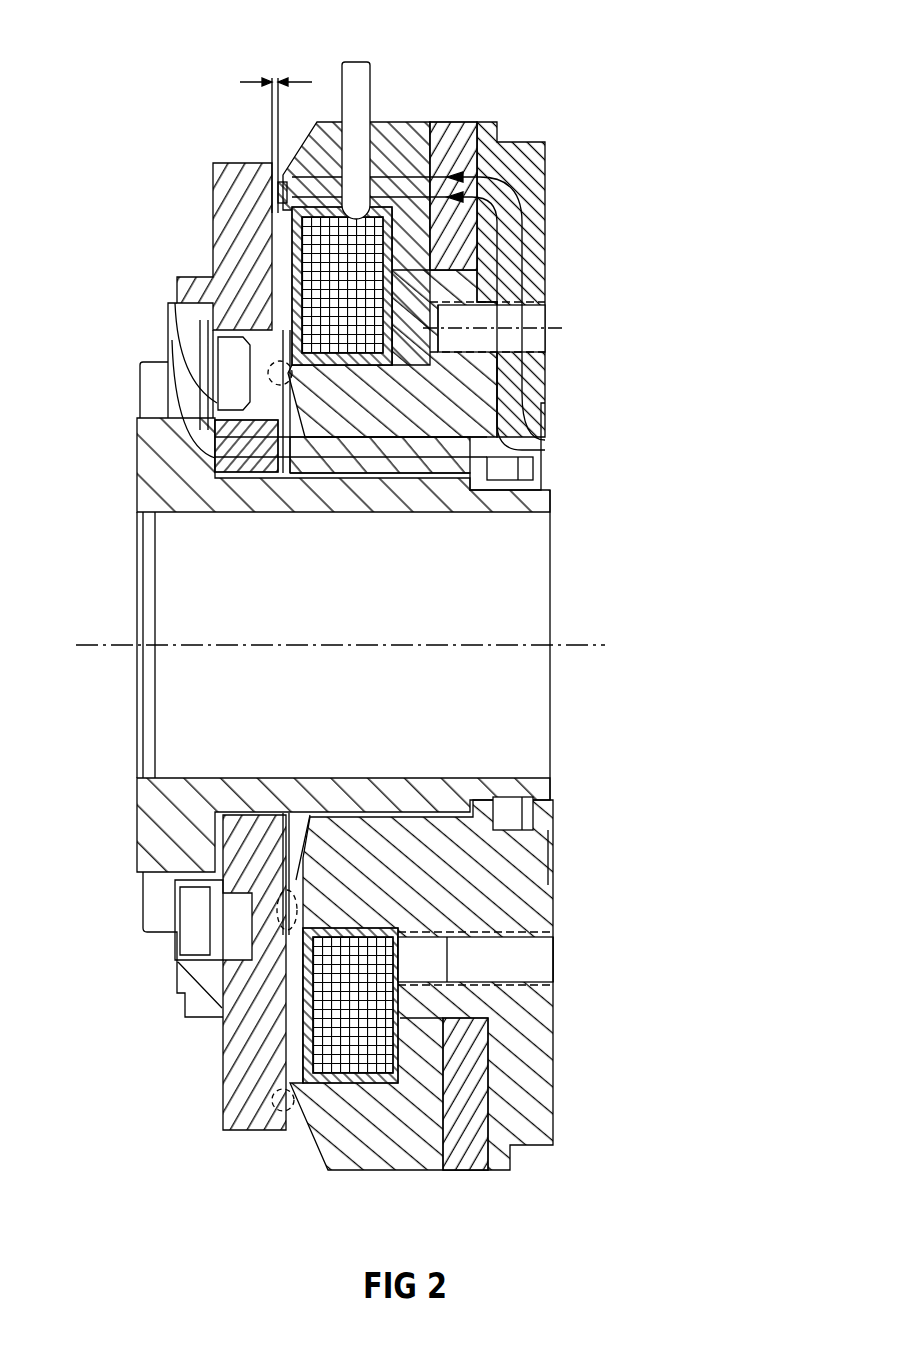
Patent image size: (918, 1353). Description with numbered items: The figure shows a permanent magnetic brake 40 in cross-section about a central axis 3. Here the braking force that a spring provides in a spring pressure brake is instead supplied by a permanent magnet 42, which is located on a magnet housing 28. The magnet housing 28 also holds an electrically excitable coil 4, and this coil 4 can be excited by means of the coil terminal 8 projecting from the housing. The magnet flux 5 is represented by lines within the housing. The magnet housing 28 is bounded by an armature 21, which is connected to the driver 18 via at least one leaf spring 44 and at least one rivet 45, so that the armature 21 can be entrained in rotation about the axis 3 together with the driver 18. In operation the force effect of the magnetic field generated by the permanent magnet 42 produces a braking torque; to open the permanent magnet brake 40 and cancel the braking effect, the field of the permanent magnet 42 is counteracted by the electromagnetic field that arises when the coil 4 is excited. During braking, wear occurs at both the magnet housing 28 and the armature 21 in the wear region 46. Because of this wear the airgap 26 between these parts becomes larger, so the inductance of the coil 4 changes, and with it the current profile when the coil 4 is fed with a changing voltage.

The permanent magnetic brake 40 is at (98, 56).
The airgap 26 is at (272, 78).
The coil terminal 8 is at (356, 75).
The magnet housing 28 is at (405, 135).
The permanent magnet 42 is at (455, 135).
The wear region 46 is at (278, 180).
The armature 21 is at (240, 243).
The leaf spring 44 is at (210, 337).
The rivet 45 is at (175, 360).
The magnet flux 5 is at (522, 222).
The electrically excitable coil 4 is at (367, 290).
The driver 18 is at (253, 493).
The axis 3 is at (518, 643).